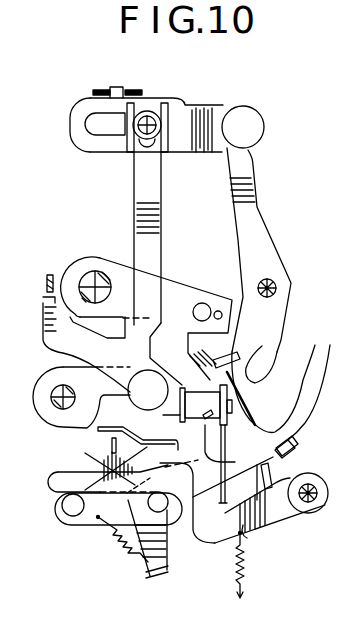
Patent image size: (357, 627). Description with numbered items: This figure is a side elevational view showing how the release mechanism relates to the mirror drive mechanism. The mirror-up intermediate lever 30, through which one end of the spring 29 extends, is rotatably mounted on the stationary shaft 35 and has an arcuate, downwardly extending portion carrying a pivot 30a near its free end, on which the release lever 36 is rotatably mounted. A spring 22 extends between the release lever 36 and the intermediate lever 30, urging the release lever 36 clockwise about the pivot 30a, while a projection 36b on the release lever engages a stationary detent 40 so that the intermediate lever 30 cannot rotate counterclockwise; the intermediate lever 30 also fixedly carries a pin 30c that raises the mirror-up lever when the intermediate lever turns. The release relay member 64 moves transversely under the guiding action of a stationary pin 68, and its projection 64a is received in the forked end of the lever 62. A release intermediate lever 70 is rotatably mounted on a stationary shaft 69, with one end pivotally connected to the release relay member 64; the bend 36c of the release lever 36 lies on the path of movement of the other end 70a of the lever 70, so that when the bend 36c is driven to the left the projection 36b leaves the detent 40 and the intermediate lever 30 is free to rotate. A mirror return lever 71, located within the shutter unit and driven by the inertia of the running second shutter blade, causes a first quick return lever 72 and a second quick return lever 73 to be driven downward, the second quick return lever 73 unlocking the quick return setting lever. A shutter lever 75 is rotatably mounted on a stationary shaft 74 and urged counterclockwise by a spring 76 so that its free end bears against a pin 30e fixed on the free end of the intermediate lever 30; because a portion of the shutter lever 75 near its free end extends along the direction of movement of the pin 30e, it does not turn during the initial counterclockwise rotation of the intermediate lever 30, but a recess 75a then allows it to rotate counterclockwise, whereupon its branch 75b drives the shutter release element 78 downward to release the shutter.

The spring 22 is at (124, 551).
The spring 29 is at (222, 315).
The mirror-up intermediate lever 30 is at (173, 278).
The pivot 30a is at (163, 505).
The pin 30c is at (202, 303).
The pin 30e is at (76, 518).
The stationary shaft 35 is at (92, 273).
The release lever 36 is at (163, 553).
The projection 36b is at (247, 532).
The bend 36c is at (287, 343).
The stationary detent 40 is at (283, 463).
The lever 62 is at (96, 92).
The release relay member 64 is at (194, 108).
The projection 64a is at (117, 87).
The stationary pin 68 is at (151, 134).
The stationary shaft 69 is at (280, 290).
The release intermediate lever 70 is at (265, 238).
The other end 70a is at (258, 368).
The mirror return lever 71 is at (47, 275).
The first quick return lever 72 is at (49, 376).
The second quick return lever 73 is at (251, 406).
The stationary shaft 74 is at (316, 503).
The shutter lever 75 is at (224, 541).
The recess 75a is at (100, 462).
The branch 75b is at (110, 434).
The spring 76 is at (243, 568).
The shutter release element 78 is at (110, 443).